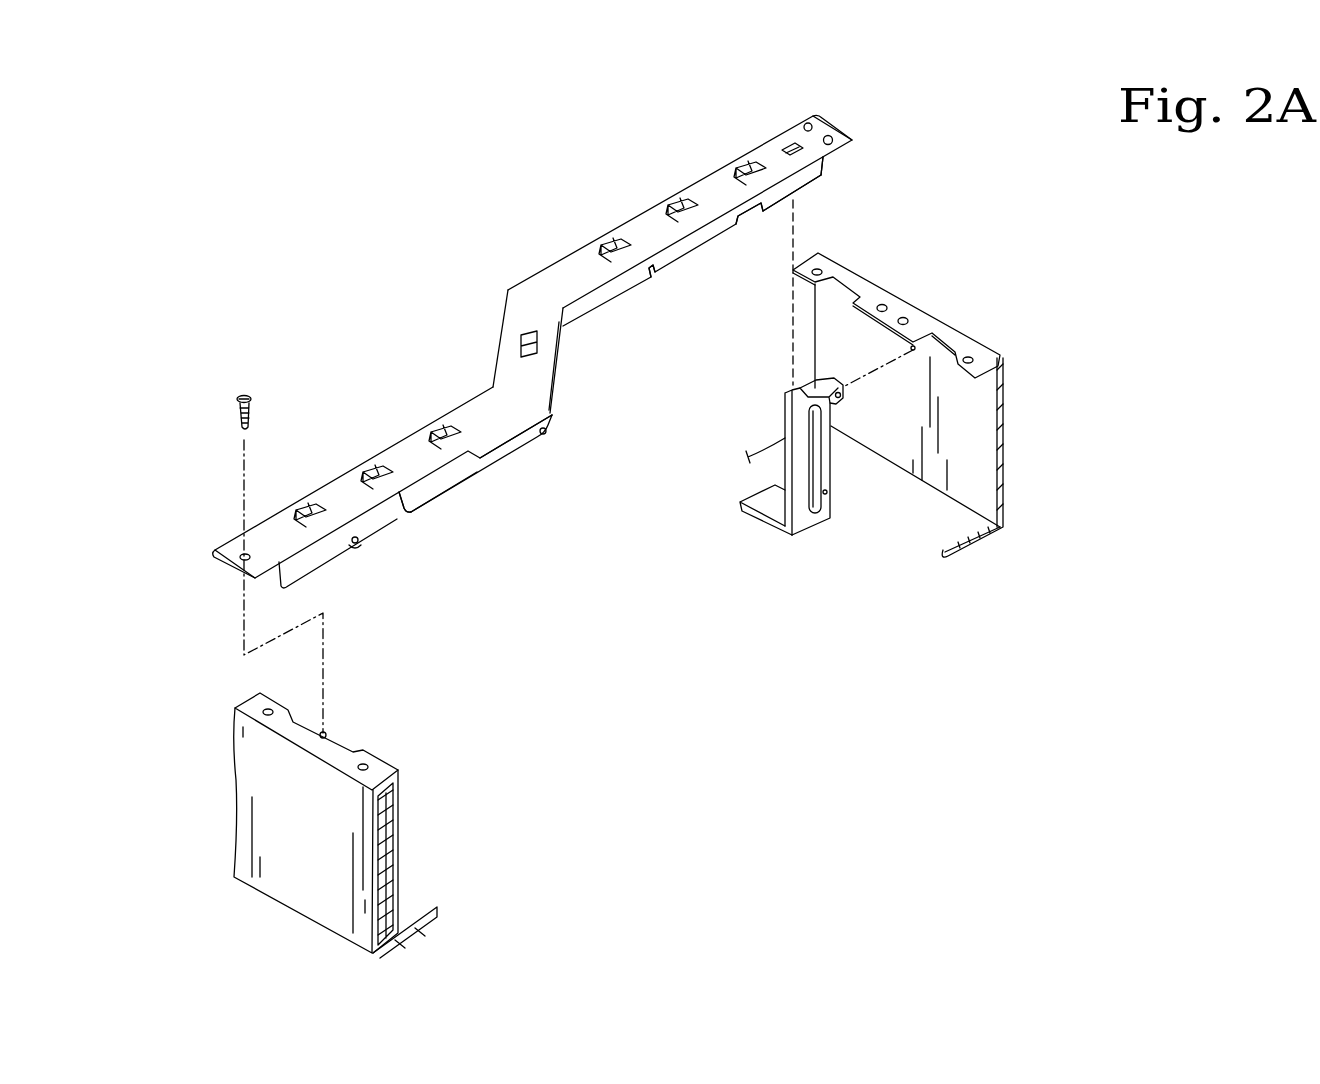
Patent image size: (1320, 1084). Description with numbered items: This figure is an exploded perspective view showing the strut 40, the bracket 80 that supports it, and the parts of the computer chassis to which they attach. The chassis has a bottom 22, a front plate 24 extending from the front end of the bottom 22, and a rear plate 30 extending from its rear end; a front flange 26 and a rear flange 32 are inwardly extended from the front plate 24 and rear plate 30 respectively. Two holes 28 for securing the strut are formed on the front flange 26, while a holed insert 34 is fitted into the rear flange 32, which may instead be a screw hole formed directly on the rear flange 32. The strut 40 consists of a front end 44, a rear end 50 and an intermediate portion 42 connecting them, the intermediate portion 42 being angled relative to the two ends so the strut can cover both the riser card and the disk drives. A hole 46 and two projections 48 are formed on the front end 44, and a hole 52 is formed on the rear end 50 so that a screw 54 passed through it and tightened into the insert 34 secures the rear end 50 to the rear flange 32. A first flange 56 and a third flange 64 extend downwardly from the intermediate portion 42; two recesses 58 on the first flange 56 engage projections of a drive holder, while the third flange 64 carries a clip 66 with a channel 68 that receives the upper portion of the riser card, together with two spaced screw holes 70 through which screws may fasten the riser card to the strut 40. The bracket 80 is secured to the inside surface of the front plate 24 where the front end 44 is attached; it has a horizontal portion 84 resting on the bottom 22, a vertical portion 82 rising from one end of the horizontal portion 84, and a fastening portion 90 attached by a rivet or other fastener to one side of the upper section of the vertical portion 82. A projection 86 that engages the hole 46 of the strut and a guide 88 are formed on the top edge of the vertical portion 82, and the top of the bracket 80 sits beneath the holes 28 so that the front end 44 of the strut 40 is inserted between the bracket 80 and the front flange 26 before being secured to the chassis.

The bottom 22 is at (413, 912).
The front plate 24 is at (1003, 432).
The front flange 26 is at (938, 330).
The holes 28 is at (902, 317).
The rear plate 30 is at (283, 878).
The rear flange 32 is at (380, 768).
The insert 34 is at (326, 733).
The strut 40 is at (530, 346).
The intermediate portion 42 is at (540, 300).
The front end 44 is at (813, 148).
The hole 46 is at (792, 146).
The projections 48 is at (835, 140).
The rear end 50 is at (230, 548).
The hole 52 is at (232, 558).
The screw 54 is at (240, 418).
The first flange 56 is at (805, 183).
The recesses 58 is at (660, 272).
The third flange 64 is at (503, 443).
The clip 66 is at (448, 491).
The channel 68 is at (403, 514).
The holes 70 is at (548, 433).
The bracket 80 is at (816, 532).
The vertical portion 82 is at (827, 455).
The horizontal portion 84 is at (765, 503).
The projection 86 is at (783, 385).
The guide 88 is at (812, 380).
The fastening portion 90 is at (845, 393).